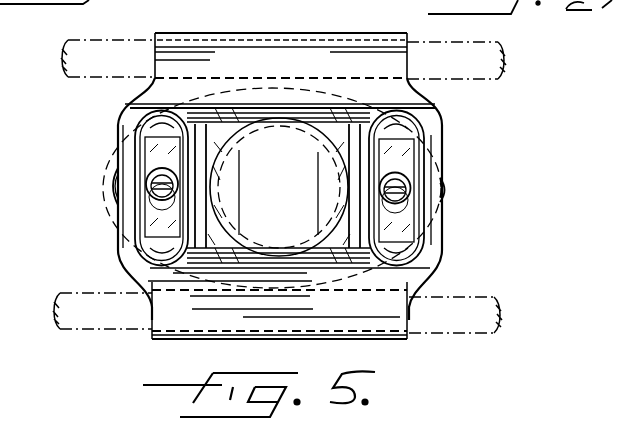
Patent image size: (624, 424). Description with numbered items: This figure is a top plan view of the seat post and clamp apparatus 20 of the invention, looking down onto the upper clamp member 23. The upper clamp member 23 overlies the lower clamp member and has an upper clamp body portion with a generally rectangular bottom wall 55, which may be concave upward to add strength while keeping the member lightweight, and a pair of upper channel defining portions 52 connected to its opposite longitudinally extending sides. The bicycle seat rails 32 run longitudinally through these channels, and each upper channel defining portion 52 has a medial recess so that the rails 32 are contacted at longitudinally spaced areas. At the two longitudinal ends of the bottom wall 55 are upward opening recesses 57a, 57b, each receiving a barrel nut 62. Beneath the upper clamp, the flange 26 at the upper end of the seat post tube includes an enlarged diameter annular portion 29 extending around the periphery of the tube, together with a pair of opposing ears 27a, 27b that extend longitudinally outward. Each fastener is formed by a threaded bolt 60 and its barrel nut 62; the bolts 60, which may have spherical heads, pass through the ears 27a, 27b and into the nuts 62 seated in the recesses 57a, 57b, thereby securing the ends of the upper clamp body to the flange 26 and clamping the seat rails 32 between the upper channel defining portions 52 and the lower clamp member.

The apparatus 20 is at (486, 196).
The upper clamp member 23 is at (440, 279).
The flange 26 is at (398, 108).
The ear 27a is at (114, 190).
The ear 27b is at (444, 195).
The enlarged diameter annular portion 29 is at (305, 283).
The seat rails 32 is at (106, 70).
The upper channel defining portions 52 is at (277, 62).
The bottom wall 55 is at (292, 206).
The upward opening recess 57a is at (140, 106).
The upward opening recess 57b is at (421, 114).
The threaded bolt 60 is at (150, 181).
The barrel nut 62 is at (142, 220).